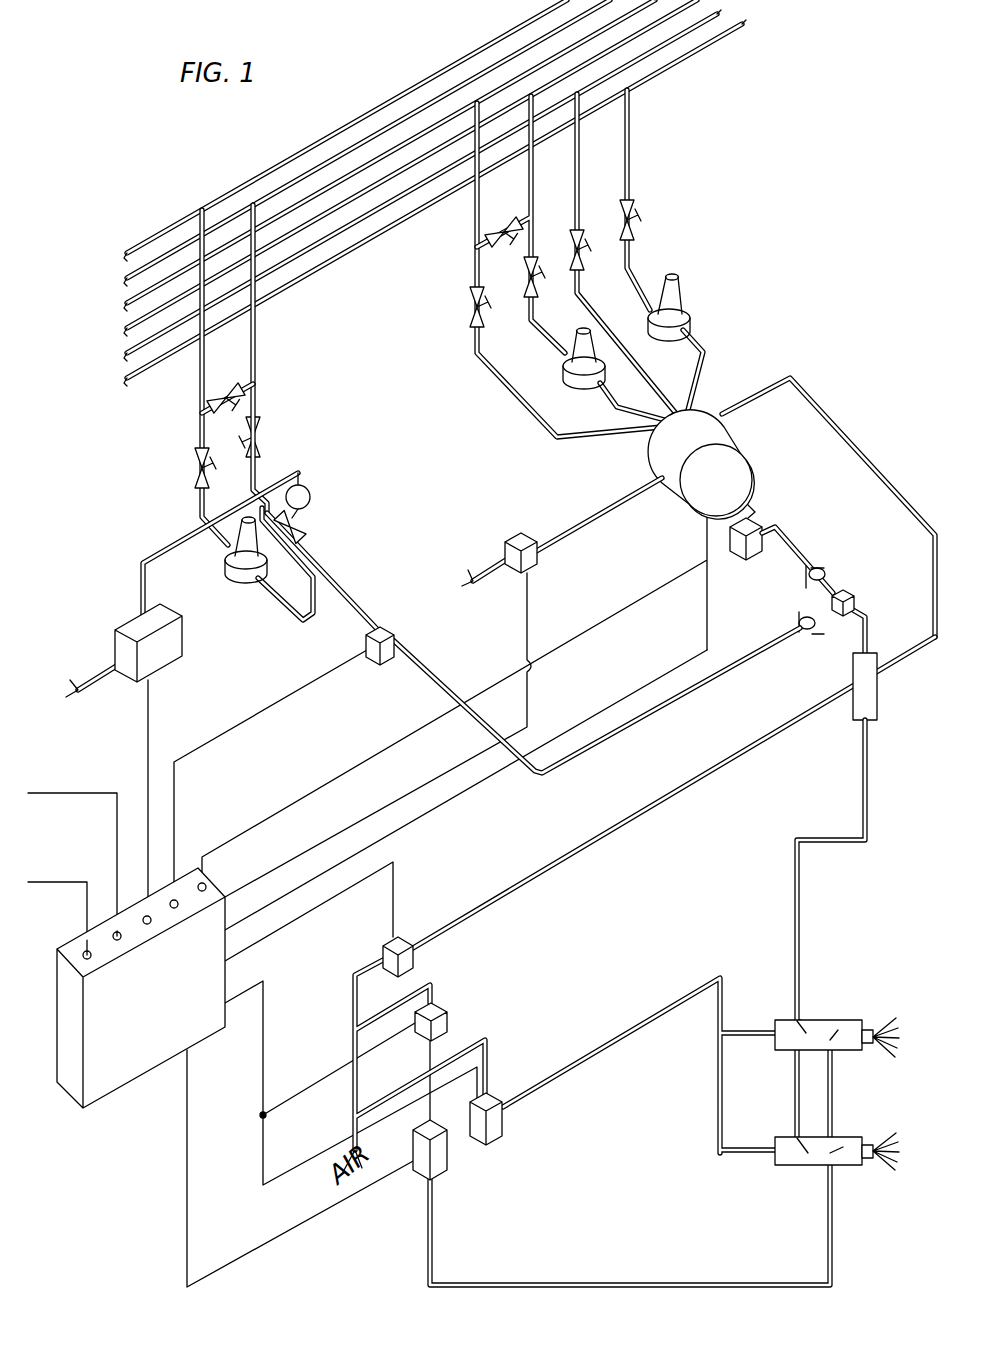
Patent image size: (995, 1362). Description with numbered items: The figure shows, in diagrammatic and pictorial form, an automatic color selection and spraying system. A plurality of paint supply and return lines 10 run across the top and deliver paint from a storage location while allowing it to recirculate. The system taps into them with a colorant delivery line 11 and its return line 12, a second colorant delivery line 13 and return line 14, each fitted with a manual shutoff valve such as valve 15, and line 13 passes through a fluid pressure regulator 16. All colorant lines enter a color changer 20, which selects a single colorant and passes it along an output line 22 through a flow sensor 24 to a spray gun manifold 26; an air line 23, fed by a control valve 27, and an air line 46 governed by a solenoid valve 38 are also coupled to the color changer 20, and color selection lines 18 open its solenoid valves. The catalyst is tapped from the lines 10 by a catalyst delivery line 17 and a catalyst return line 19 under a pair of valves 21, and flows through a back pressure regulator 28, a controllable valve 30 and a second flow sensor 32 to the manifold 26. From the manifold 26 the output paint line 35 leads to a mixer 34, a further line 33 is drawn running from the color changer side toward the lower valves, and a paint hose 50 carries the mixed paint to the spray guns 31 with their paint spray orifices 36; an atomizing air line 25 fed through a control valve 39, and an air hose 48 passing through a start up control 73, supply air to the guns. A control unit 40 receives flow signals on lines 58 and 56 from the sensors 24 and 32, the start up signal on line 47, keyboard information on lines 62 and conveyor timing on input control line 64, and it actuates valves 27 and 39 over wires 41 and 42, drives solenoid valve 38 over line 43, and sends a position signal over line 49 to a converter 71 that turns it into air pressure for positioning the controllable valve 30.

The paint supply and return lines 10 is at (366, 260).
The colorant delivery line 11 is at (530, 185).
The colorant return line 12 is at (475, 215).
The second colorant delivery line 13 is at (632, 118).
The second colorant return line 14 is at (576, 172).
The manual valve 15 is at (636, 212).
The regulator 16 is at (695, 305).
The catalyst delivery line 17 is at (256, 345).
The control lines 18 is at (705, 630).
The catalyst return line 19 is at (195, 382).
The color changer 20 is at (738, 420).
The valves 21 is at (256, 432).
The output line 22 is at (752, 502).
The air line 23 is at (858, 440).
The flow sensor 24 is at (762, 560).
The atomizing air line 25 is at (575, 1283).
The spray gun manifold 26 is at (848, 588).
The control valve 27 is at (415, 955).
The back pressure regulator 28 is at (222, 572).
The controllable valve 30 is at (311, 495).
The spray guns 31 is at (820, 1020).
The flow sensor 32 is at (365, 642).
The pipe 33 is at (757, 742).
The mixer 34 is at (878, 712).
The output paint line 35 is at (552, 777).
The paint spray orifices 36 is at (875, 1030).
The solenoid valve 38 is at (508, 536).
The control valve 39 is at (449, 1012).
The control unit 40 is at (141, 988).
The wire 41 is at (272, 935).
The wire 42 is at (265, 1050).
The line 43 is at (528, 605).
The air line 46 is at (598, 497).
The line 47 is at (190, 1195).
The air hose 48 is at (552, 1075).
The line 49 is at (150, 712).
The paint hose 50 is at (802, 930).
The line 56 is at (222, 740).
The line 58 is at (620, 607).
The lines 62 is at (50, 880).
The input control line 64 is at (70, 790).
The converter 71 is at (185, 652).
The start up control 73 is at (448, 1165).